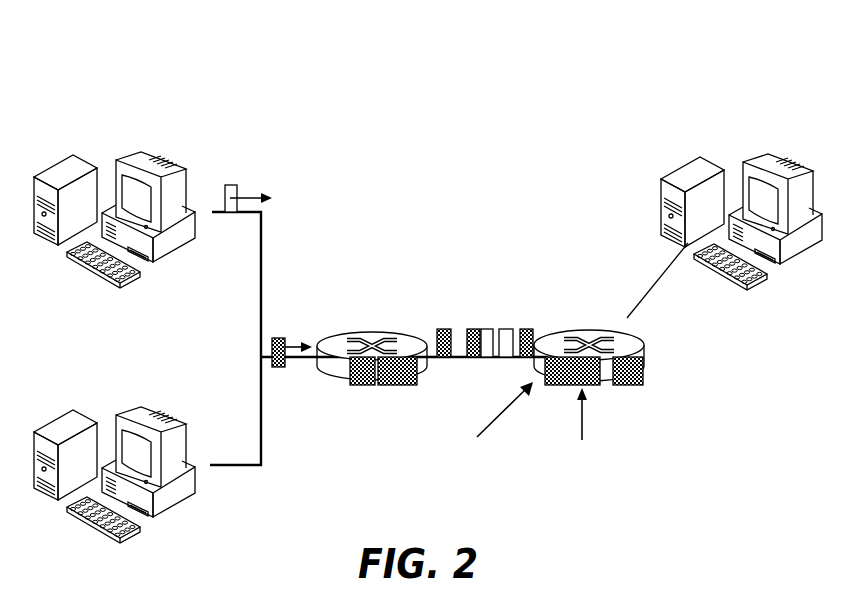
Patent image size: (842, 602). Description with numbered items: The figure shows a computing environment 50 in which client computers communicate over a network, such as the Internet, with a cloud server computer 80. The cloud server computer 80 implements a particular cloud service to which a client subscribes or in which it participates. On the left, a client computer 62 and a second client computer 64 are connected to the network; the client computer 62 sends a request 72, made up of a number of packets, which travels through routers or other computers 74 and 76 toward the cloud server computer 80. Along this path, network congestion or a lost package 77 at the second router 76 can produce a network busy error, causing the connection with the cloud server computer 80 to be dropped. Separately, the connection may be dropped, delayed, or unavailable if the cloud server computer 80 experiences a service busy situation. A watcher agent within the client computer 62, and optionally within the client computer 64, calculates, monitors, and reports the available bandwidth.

The computing environment 50 is at (128, 73).
The client computer 62 is at (125, 162).
The client computer 64 is at (123, 415).
The request 72 is at (233, 185).
The router 74 is at (375, 333).
The router 76 is at (643, 340).
The lost package 77 is at (537, 370).
The cloud server computer 80 is at (752, 163).